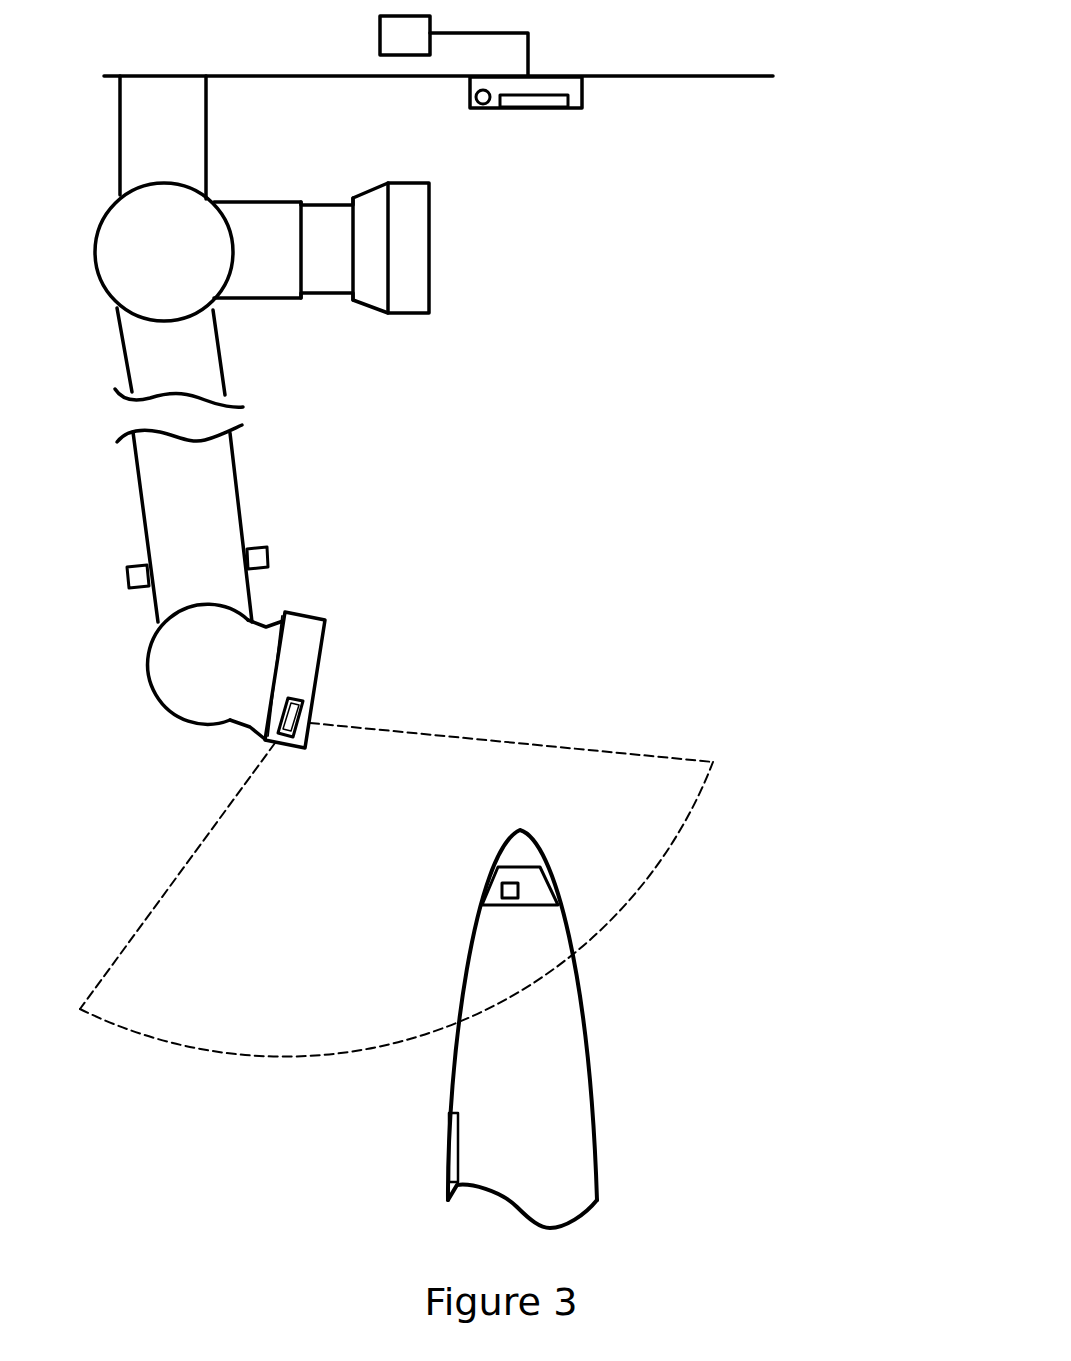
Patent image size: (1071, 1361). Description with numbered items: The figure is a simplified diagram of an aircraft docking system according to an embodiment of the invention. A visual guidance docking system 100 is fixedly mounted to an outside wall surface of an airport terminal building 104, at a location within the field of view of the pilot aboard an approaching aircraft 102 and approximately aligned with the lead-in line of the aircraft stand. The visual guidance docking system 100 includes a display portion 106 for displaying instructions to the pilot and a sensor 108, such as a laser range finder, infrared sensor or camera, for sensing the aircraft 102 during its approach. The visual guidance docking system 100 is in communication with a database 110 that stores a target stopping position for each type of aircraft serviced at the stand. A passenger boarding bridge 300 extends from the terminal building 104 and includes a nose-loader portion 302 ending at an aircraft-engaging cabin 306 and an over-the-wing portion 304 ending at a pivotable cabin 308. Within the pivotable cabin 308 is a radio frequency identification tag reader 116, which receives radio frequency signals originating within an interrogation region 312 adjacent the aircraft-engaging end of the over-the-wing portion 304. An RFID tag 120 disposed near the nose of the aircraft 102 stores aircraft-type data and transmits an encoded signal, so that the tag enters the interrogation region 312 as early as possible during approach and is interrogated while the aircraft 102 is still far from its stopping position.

The visual guidance docking system 100 is at (583, 96).
The aircraft 102 is at (567, 1098).
The airport terminal building 104 is at (676, 64).
The display portion 106 is at (527, 108).
The sensor 108 is at (478, 108).
The database 110 is at (383, 55).
The radio frequency identification tag reader 116 is at (300, 697).
The RFID tag 120 is at (508, 883).
The passenger boarding bridge 300 is at (442, 421).
The nose-loader portion 302 is at (265, 298).
The over-the-wing portion 304 is at (238, 508).
The aircraft-engaging cabin 306 is at (430, 290).
The pivotable cabin 308 is at (312, 613).
The interrogation region 312 is at (612, 793).